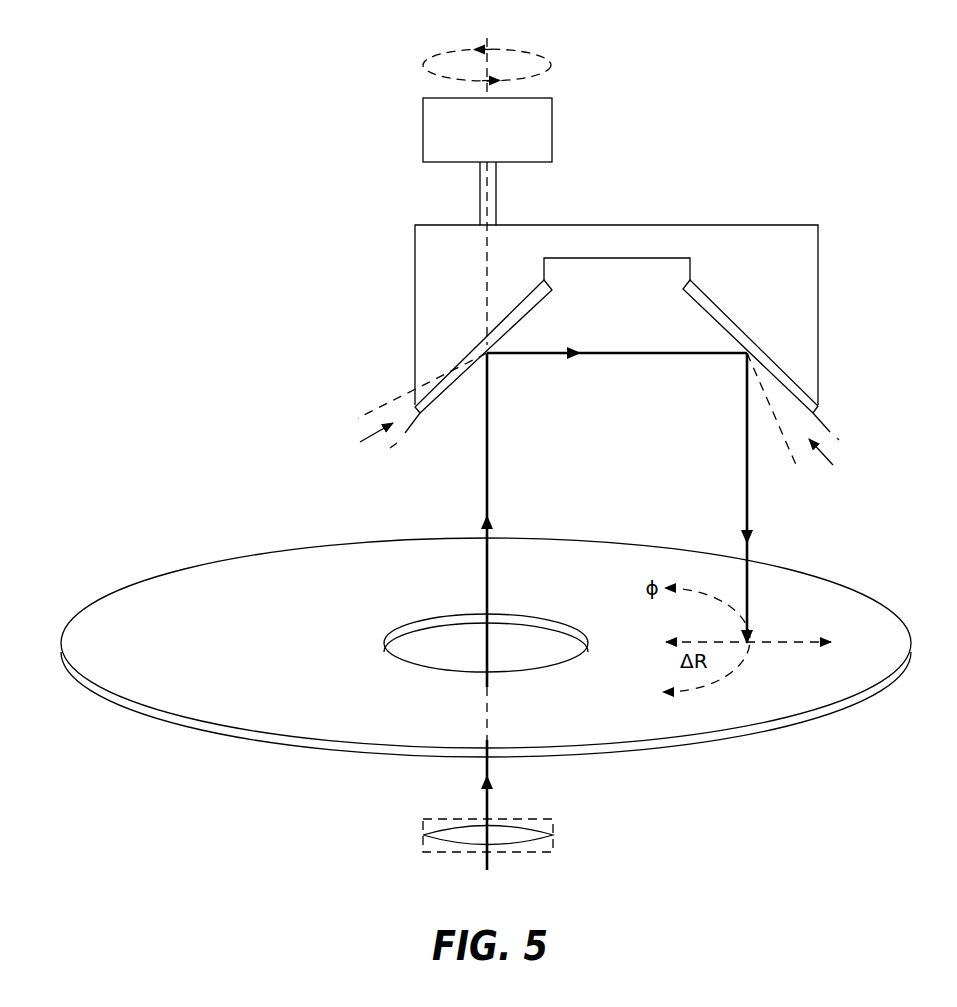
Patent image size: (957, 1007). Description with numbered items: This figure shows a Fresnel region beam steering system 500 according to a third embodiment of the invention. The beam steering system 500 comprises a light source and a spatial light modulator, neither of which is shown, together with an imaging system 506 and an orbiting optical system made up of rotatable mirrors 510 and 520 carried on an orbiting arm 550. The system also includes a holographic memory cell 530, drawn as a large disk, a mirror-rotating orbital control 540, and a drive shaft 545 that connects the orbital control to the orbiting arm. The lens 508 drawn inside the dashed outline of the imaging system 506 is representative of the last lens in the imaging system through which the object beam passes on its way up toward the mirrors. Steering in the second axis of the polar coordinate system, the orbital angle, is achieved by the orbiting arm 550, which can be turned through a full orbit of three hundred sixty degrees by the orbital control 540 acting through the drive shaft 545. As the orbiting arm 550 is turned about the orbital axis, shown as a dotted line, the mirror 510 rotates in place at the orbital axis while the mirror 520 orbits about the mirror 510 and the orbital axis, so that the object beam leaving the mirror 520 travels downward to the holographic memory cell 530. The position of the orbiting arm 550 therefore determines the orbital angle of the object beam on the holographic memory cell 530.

The Fresnel region beam steering system 500 is at (226, 834).
The imaging system 506 is at (557, 814).
The lens 508 is at (556, 837).
The rotatable mirror 510 is at (524, 322).
The rotatable mirror 520 is at (712, 322).
The holographic memory cell 530 is at (297, 750).
The orbital control 540 is at (556, 131).
The drive shaft 545 is at (499, 195).
The orbiting arm 550 is at (710, 223).